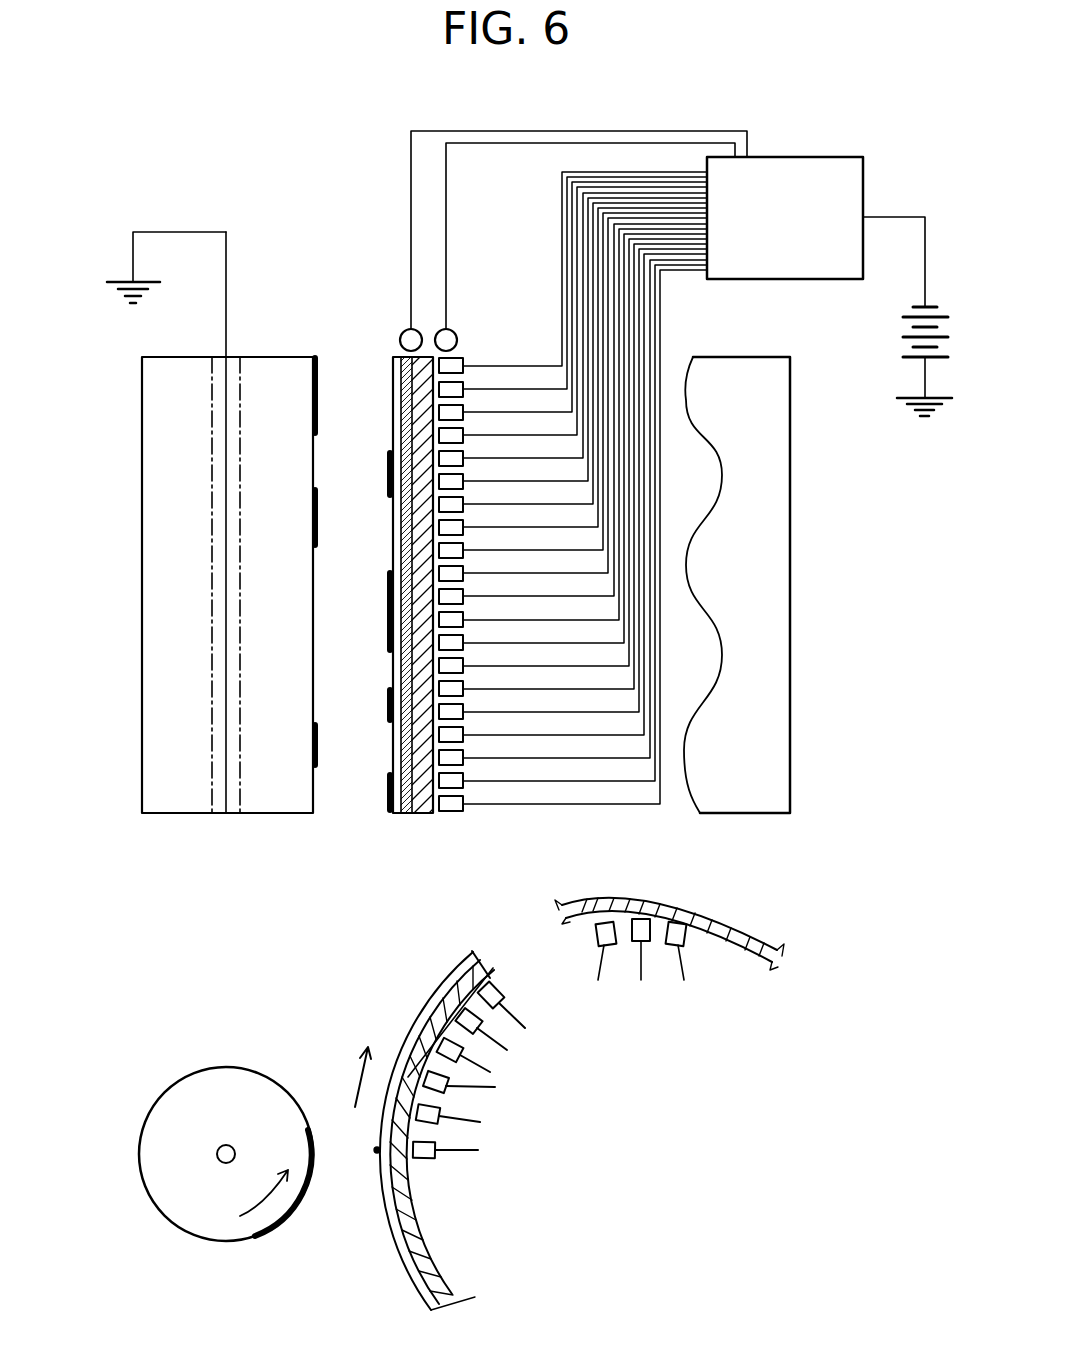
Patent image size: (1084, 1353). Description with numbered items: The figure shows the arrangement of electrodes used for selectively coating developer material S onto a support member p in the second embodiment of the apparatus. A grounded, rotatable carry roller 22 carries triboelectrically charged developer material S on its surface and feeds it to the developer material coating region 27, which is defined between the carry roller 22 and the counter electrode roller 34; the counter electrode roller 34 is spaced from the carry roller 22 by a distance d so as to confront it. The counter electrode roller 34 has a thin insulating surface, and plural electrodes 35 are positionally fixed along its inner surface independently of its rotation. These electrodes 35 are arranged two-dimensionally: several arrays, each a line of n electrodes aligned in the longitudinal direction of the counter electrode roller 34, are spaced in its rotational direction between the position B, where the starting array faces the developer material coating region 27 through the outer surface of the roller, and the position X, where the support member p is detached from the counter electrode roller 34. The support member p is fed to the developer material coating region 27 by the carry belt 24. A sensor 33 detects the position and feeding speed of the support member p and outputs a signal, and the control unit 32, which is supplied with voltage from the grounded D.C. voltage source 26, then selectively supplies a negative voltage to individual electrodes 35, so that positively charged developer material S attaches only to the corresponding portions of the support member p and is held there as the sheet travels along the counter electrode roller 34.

The carry roller 22 is at (190, 813).
The carry belt 24 is at (412, 813).
The D.C. voltage source 26 is at (905, 328).
The developer material coating region 27 is at (365, 628).
The control unit 32 is at (805, 157).
The sensor 33 is at (478, 326).
The counter electrode roller 34 is at (722, 795).
The electrodes 35 is at (452, 813).
The developer material S is at (385, 792).
The support member p is at (398, 813).
The position where starting electrode array faces coating region B is at (415, 1160).
The position where support member is detached from counter electrode roller X is at (680, 918).
The distance d is at (392, 283).